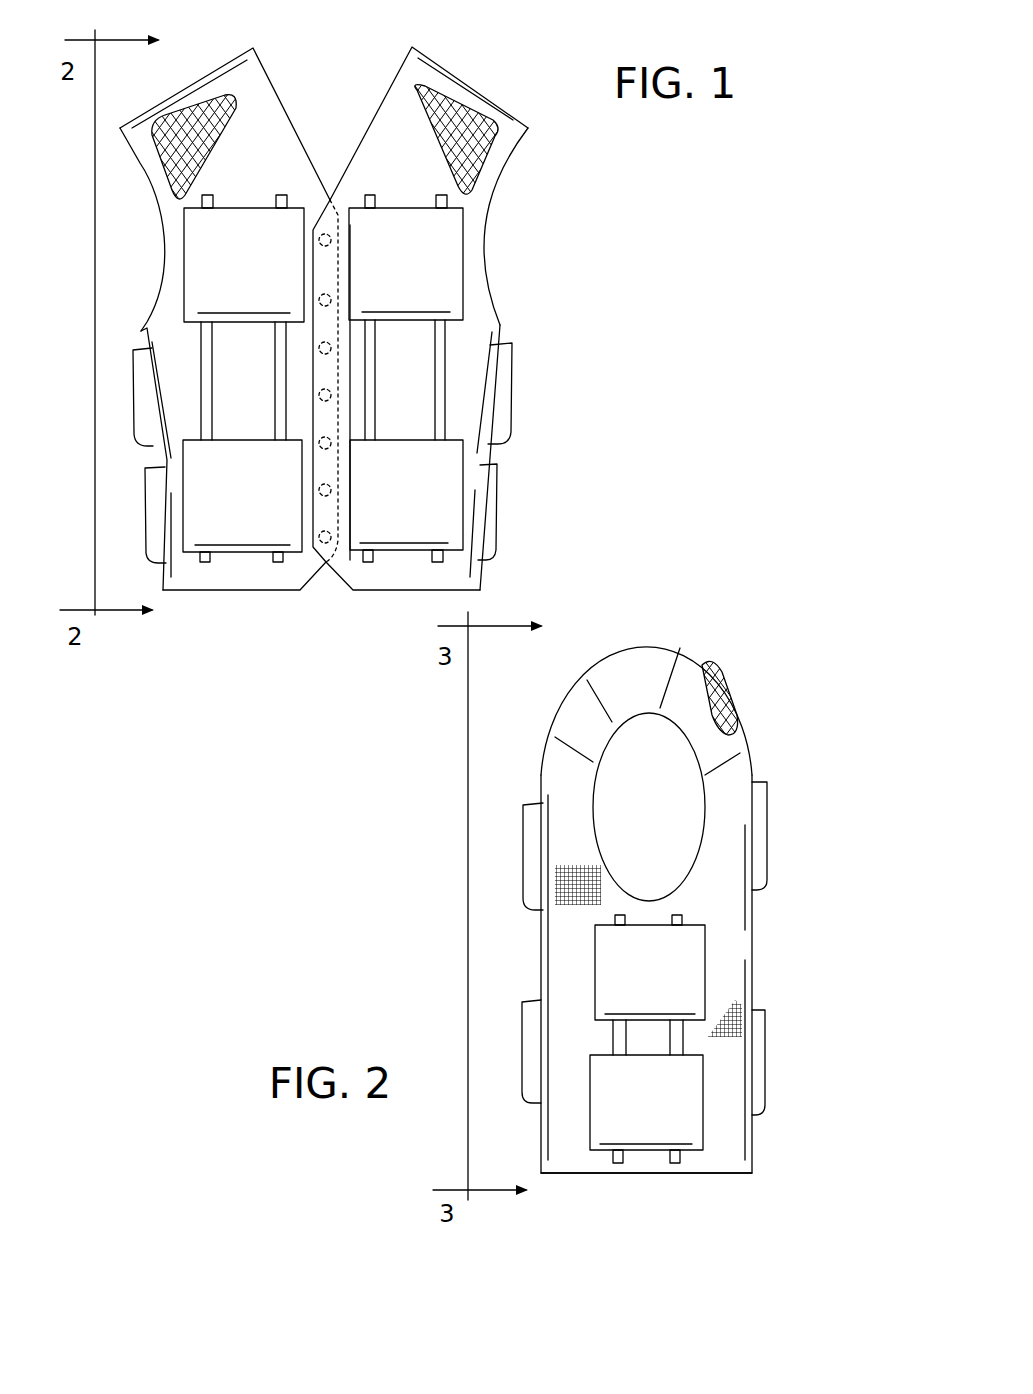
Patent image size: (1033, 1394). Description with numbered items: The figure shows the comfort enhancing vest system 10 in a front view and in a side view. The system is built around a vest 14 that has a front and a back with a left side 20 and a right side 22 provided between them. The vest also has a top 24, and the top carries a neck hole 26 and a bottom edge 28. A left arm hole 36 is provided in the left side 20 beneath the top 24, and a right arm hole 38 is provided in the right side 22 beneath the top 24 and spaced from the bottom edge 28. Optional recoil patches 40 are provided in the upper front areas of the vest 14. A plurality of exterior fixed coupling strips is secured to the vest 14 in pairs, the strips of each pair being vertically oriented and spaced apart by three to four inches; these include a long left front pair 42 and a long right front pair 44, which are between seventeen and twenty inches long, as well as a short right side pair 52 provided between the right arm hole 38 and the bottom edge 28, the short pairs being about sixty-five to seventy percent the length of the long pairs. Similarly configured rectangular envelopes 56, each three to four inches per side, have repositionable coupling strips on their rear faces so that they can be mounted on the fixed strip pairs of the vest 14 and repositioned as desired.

In FIG. 1, the comfort enhancing vest system 10 is at (684, 386).
In FIG. 1, the vest 14 is at (530, 128).
In FIG. 2, the vest 14 is at (693, 648).
In FIG. 1, the left side 20 is at (140, 332).
In FIG. 1, the right side 22 is at (500, 323).
In FIG. 1, the top 24 is at (437, 62).
In FIG. 2, the top 24 is at (637, 632).
In FIG. 1, the neck hole 26 is at (362, 137).
In FIG. 1, the bottom edge 28 is at (388, 592).
In FIG. 2, the bottom edge 28 is at (693, 1175).
In FIG. 1, the left arm hole 36 is at (150, 215).
In FIG. 2, the left arm hole 36 is at (750, 745).
In FIG. 1, the right arm hole 38 is at (478, 268).
In FIG. 1, the recoil patches 40 is at (180, 130).
In FIG. 1, the long left front pair 42 is at (433, 407).
In FIG. 1, the long right front pair 44 is at (210, 345).
In FIG. 2, the short right side pair 52 is at (623, 1163).
In FIG. 2, the rectangular envelopes 56 is at (767, 852).